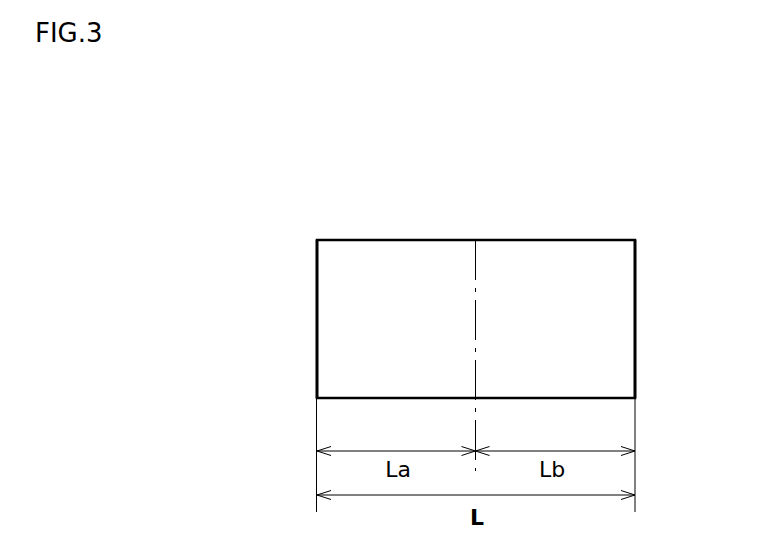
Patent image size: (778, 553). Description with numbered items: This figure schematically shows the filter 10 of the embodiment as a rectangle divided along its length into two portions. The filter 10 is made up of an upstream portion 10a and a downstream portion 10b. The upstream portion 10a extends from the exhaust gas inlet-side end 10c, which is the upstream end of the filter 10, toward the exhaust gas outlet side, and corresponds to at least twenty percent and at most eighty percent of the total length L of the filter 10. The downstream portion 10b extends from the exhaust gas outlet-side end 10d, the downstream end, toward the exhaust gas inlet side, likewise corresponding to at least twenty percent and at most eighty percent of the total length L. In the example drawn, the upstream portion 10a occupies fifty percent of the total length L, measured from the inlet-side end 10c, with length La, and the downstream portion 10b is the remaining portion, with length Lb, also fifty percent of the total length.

The filter 10 is at (608, 190).
The upstream portion 10a is at (378, 246).
The downstream portion 10b is at (557, 246).
The exhaust gas inlet-side end 10c is at (317, 270).
The exhaust gas outlet-side end 10d is at (635, 272).